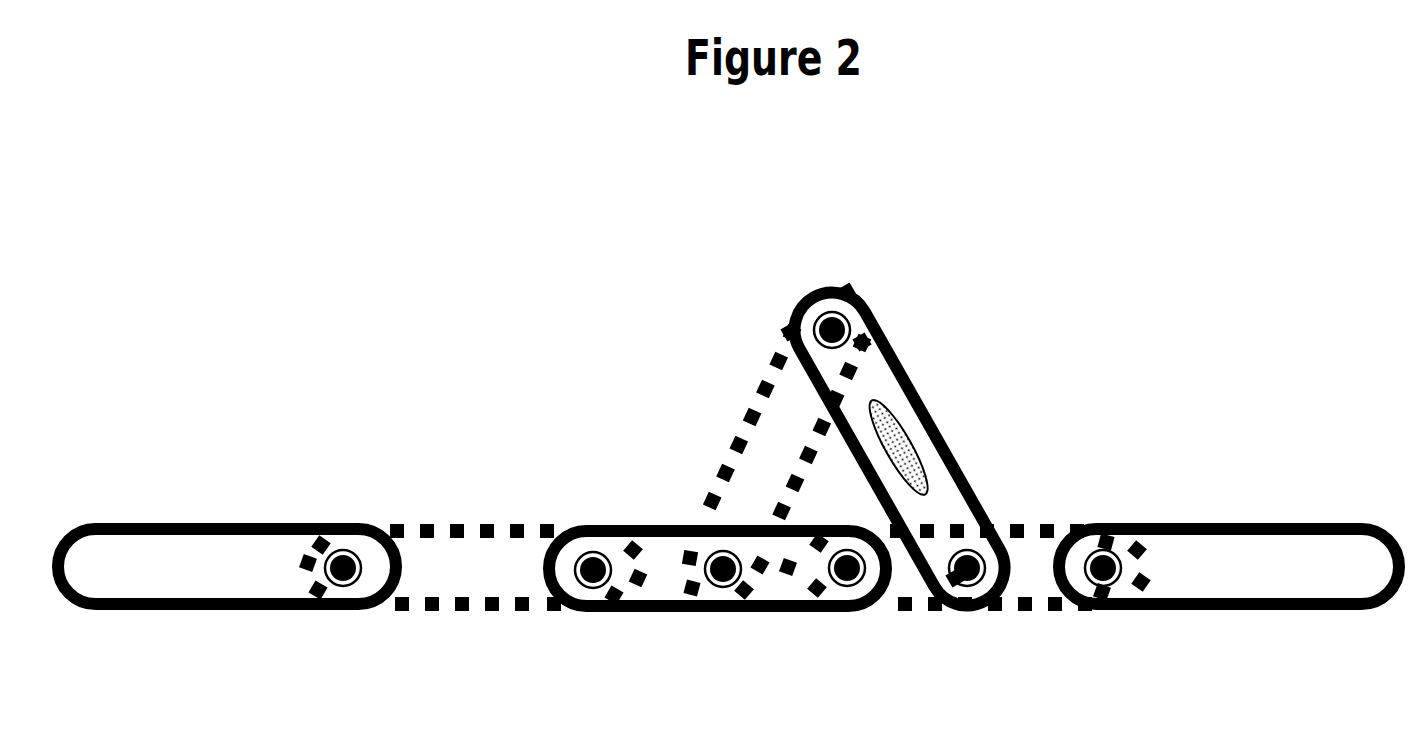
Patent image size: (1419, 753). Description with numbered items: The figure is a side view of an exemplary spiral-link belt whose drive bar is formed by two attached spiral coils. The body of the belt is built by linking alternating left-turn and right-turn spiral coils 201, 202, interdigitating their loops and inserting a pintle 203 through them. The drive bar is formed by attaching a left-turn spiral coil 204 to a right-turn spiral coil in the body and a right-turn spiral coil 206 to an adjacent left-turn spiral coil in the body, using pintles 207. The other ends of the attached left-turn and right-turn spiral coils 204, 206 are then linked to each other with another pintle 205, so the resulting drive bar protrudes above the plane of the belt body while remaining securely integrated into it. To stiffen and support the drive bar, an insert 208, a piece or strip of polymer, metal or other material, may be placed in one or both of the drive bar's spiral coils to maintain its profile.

The left-turn spiral coil 201 is at (453, 523).
The right-turn spiral coil 202 is at (647, 613).
The pintle 203 is at (591, 562).
The left-turn spiral coil 204 is at (747, 420).
The pintle 205 is at (826, 324).
The right-turn spiral coil 206 is at (903, 360).
The pintles 207 is at (942, 587).
The insert 208 is at (915, 445).